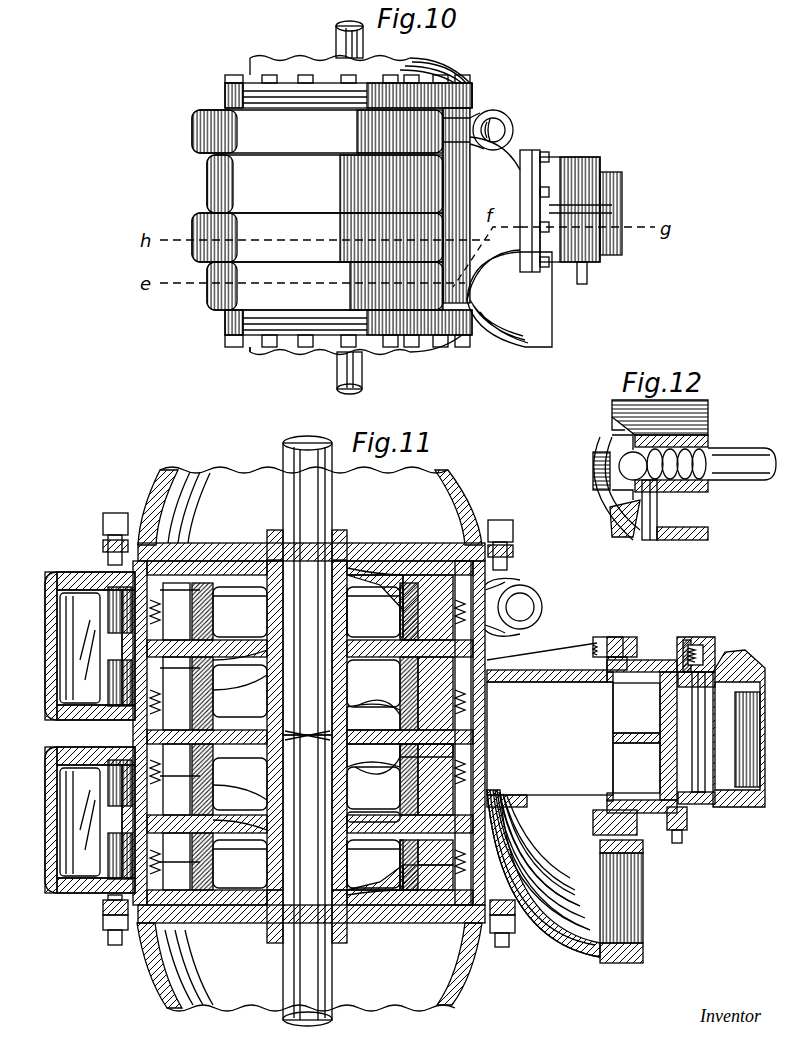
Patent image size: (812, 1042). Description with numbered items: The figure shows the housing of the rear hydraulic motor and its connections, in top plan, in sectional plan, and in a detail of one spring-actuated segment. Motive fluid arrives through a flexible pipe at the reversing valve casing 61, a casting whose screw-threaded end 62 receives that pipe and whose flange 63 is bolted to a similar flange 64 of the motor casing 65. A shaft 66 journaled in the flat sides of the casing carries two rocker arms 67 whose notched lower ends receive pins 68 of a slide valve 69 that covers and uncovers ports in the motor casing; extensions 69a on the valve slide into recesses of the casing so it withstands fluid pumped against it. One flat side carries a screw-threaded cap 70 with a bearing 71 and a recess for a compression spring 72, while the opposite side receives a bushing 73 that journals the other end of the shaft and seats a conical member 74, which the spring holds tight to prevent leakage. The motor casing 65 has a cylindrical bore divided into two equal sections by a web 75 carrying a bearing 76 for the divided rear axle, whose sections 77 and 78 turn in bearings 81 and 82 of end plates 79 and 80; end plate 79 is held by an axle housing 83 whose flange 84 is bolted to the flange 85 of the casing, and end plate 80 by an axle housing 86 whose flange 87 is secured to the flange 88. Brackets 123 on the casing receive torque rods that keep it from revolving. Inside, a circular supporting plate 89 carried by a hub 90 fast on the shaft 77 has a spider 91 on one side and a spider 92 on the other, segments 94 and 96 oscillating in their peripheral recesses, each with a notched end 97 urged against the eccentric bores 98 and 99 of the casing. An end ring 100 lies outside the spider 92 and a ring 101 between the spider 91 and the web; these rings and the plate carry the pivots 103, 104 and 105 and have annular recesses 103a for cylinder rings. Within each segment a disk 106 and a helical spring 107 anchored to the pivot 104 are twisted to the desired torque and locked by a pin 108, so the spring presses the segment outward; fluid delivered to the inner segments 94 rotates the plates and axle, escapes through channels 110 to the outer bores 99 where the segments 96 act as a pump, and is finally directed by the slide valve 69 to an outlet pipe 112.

In FIG. 10, the reversing valve casing 61 is at (558, 172).
In FIG. 11, the reversing valve casing 61 is at (652, 660).
In FIG. 10, the end of valve casing 62 is at (622, 190).
In FIG. 11, the end of valve casing 62 is at (750, 663).
In FIG. 10, the flange of valve casing 63 is at (541, 152).
In FIG. 11, the flange of valve casing 63 is at (617, 637).
In FIG. 10, the flange of motor casing 64 is at (526, 150).
In FIG. 11, the flange of motor casing 64 is at (600, 637).
In FIG. 10, the rear motor casing 65 is at (331, 209).
In FIG. 11, the rear motor casing 65 is at (523, 670).
In FIG. 11, the shaft 66 is at (705, 710).
In FIG. 11, the rocker arms 67 is at (683, 690).
In FIG. 11, the pins 68 is at (627, 695).
In FIG. 11, the slide valve 69 is at (662, 712).
In FIG. 11, the extensions 69a is at (610, 793).
In FIG. 11, the screw-threaded cap 70 is at (705, 640).
In FIG. 11, the bearing 71 is at (688, 640).
In FIG. 11, the compression spring 72 is at (703, 643).
In FIG. 11, the bushing 73 is at (677, 838).
In FIG. 11, the conical member 74 is at (640, 820).
In FIG. 11, the web 75 is at (373, 737).
In FIG. 11, the bearing 76 is at (350, 670).
In FIG. 10, the axle section 77 is at (340, 375).
In FIG. 11, the axle section 77 is at (307, 878).
In FIG. 10, the axle section 78 is at (336, 40).
In FIG. 11, the axle section 78 is at (307, 585).
In FIG. 10, the end plate 79 is at (228, 322).
In FIG. 11, the end plate 79 is at (437, 925).
In FIG. 10, the end plate 80 is at (472, 95).
In FIG. 11, the end plate 80 is at (415, 545).
In FIG. 11, the bearing 81 is at (332, 943).
In FIG. 11, the bearing 82 is at (335, 535).
In FIG. 10, the axle housing 83 is at (252, 350).
In FIG. 11, the axle housing 83 is at (455, 985).
In FIG. 10, the flange of axle housing 84 is at (228, 338).
In FIG. 11, the flange of axle housing 84 is at (103, 925).
In FIG. 10, the flange of casing 85 is at (230, 316).
In FIG. 11, the flange of casing 85 is at (103, 910).
In FIG. 10, the axle housing 86 is at (440, 56).
In FIG. 11, the axle housing 86 is at (158, 495).
In FIG. 10, the flange of axle housing 87 is at (225, 84).
In FIG. 11, the flange of axle housing 87 is at (508, 535).
In FIG. 10, the flange of casing 88 is at (225, 100).
In FIG. 11, the flange of casing 88 is at (508, 553).
In FIG. 11, the circular supporting plate 89 is at (388, 737).
In FIG. 11, the hub 90 is at (357, 737).
In FIG. 11, the spider 91 is at (218, 685).
In FIG. 11, the spider 92 is at (218, 612).
In FIG. 11, the segments 94 is at (418, 798).
In FIG. 12, the segments 96 is at (592, 480).
In FIG. 11, the segments 96 is at (403, 900).
In FIG. 12, the notched end 97 is at (612, 421).
In FIG. 11, the eccentric bores 98 is at (118, 684).
In FIG. 11, the eccentric bores 99 is at (118, 611).
In FIG. 11, the end ring 100 is at (425, 572).
In FIG. 11, the ring 101 is at (425, 749).
In FIG. 11, the pivot 103 is at (515, 872).
In FIG. 11, the annular recesses 103a is at (520, 885).
In FIG. 12, the pivot 104 is at (735, 480).
In FIG. 11, the pivot 104 is at (497, 810).
In FIG. 11, the pivot 105 is at (490, 766).
In FIG. 12, the disk 106 is at (630, 468).
In FIG. 11, the disk 106 is at (492, 787).
In FIG. 12, the helical spring 107 is at (708, 450).
In FIG. 11, the helical spring 107 is at (505, 840).
In FIG. 12, the pin 108 is at (665, 518).
In FIG. 11, the pin 108 is at (180, 736).
In FIG. 11, the channels 110 is at (80, 734).
In FIG. 11, the outlet pipe 112 is at (565, 822).
In FIG. 10, the brackets 123 is at (500, 115).
In FIG. 11, the brackets 123 is at (540, 592).